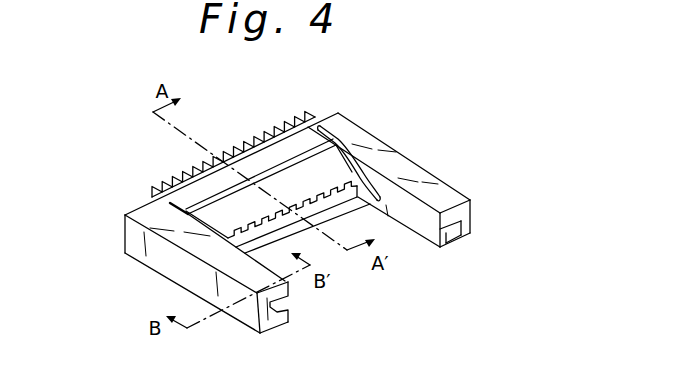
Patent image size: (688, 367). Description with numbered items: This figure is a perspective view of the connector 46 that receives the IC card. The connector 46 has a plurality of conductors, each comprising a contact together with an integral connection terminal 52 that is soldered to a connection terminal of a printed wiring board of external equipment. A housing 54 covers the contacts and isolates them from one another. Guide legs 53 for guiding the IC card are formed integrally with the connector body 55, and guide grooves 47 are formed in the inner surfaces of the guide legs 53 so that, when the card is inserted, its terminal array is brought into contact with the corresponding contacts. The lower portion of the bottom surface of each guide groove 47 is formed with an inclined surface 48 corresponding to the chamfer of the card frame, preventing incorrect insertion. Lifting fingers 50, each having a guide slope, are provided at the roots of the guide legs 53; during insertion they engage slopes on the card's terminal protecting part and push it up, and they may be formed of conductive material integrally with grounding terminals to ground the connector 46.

The connector 46 is at (147, 268).
The guide groove 47 is at (462, 223).
The inclined surface 48 is at (461, 237).
The lifting finger 50 is at (358, 180).
The connection terminal 52 is at (231, 160).
The guide leg 53 is at (443, 193).
The housing 54 is at (328, 170).
The connector body 55 is at (267, 158).